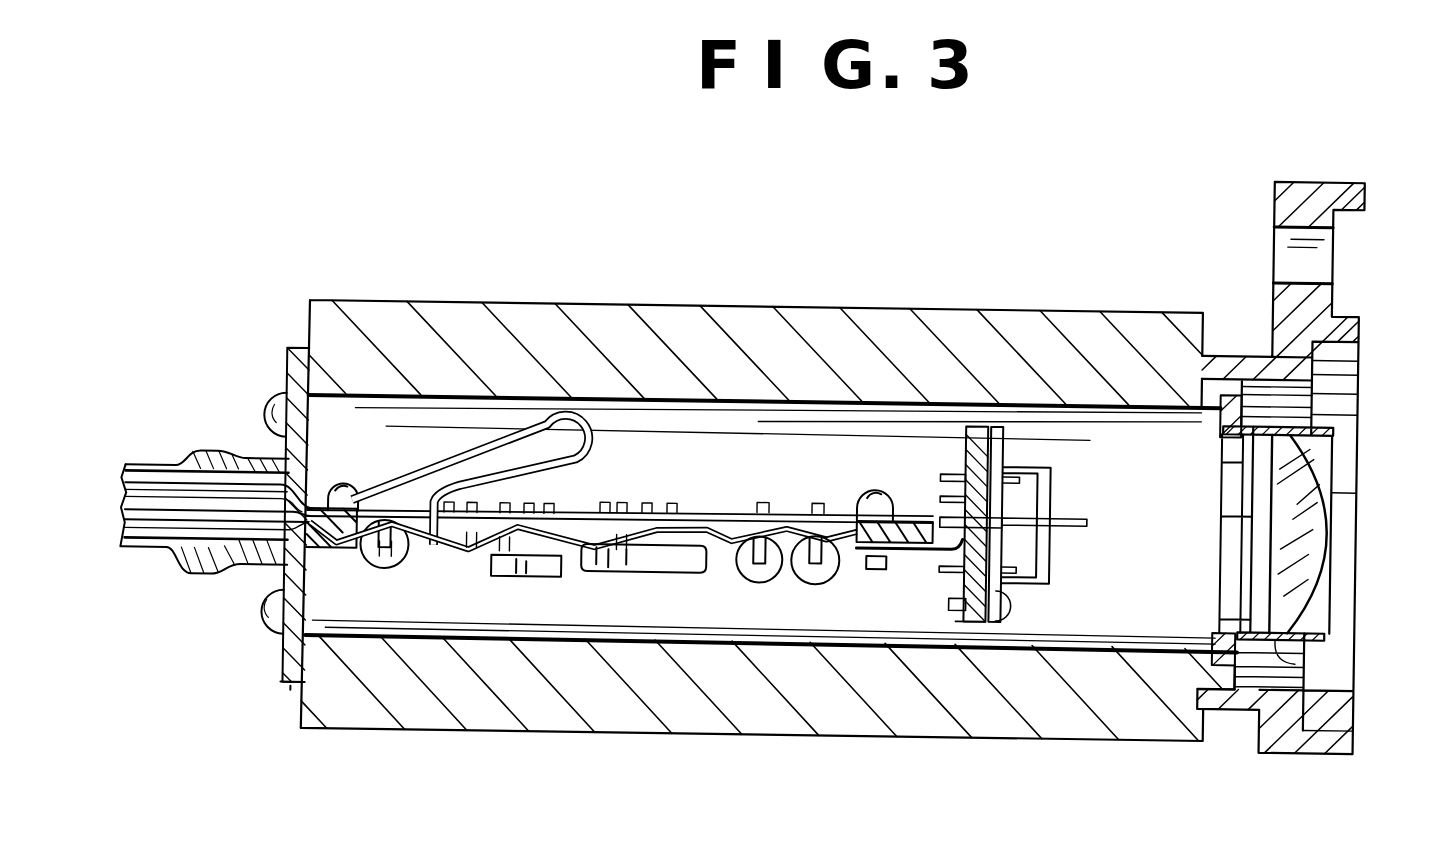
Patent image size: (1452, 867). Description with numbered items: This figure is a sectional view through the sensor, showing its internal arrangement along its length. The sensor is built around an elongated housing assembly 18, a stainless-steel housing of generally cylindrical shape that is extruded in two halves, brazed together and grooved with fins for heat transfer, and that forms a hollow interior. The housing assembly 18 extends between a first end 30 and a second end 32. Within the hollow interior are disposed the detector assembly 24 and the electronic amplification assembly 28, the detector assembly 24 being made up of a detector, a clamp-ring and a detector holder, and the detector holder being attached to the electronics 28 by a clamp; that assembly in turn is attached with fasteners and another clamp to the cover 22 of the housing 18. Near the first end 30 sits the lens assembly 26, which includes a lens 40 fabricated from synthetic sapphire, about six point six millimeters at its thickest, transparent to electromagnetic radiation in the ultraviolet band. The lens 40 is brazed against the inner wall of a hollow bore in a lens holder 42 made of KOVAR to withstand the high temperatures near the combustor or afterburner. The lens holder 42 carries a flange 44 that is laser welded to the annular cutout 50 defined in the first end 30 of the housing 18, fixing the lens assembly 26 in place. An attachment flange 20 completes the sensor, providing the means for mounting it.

The housing assembly 18 is at (805, 300).
The attachment flange 20 is at (1355, 292).
The cover 22 is at (285, 373).
The detector assembly 24 is at (1060, 497).
The lens assembly 26 is at (1318, 452).
The electronic amplification assembly 28 is at (630, 567).
The first end 30 is at (1212, 730).
The second end 32 is at (290, 690).
The lens 40 is at (1290, 543).
The lens holder 42 is at (1283, 655).
The flange 44 is at (1217, 633).
The annular cutout 50 is at (1200, 670).